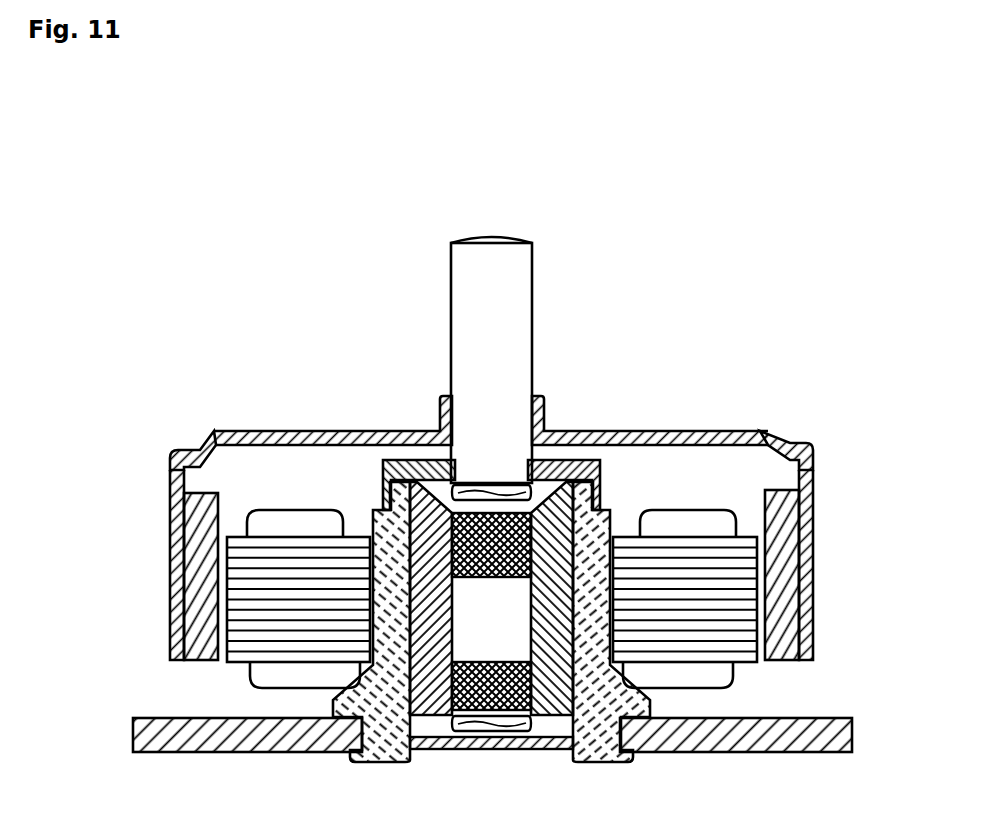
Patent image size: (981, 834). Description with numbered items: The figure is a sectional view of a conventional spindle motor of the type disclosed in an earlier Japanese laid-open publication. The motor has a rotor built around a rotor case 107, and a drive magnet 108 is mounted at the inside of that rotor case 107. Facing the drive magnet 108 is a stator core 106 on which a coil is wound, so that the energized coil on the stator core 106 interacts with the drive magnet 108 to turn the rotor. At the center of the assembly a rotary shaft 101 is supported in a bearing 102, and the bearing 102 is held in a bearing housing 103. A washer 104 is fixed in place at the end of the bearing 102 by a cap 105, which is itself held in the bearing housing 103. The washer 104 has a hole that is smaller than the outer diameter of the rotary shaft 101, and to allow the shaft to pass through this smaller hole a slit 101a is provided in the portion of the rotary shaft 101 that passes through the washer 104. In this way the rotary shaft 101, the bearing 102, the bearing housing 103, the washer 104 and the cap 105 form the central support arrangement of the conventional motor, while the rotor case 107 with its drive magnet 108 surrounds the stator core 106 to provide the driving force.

The rotary shaft 101 is at (505, 287).
The slit 101a is at (500, 473).
The bearing 102 is at (603, 497).
The bearing housing 103 is at (372, 525).
The washer 104 is at (565, 453).
The cap 105 is at (357, 437).
The stator core 106 is at (172, 535).
The rotor case 107 is at (768, 425).
The drive magnet 108 is at (815, 497).